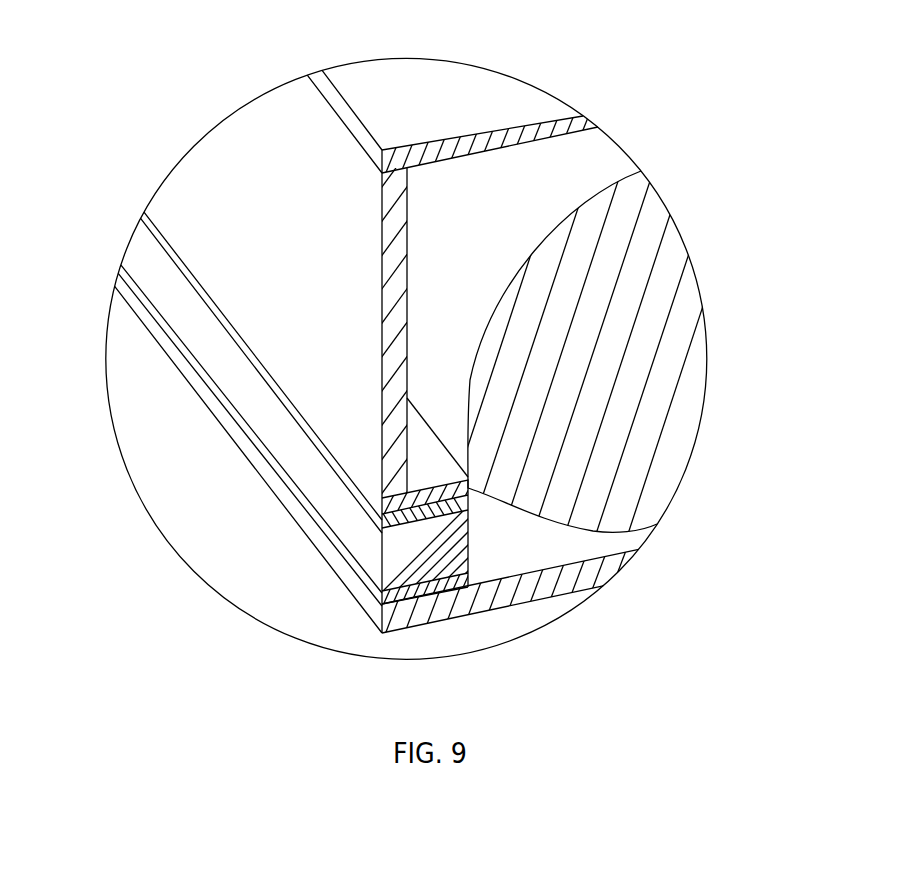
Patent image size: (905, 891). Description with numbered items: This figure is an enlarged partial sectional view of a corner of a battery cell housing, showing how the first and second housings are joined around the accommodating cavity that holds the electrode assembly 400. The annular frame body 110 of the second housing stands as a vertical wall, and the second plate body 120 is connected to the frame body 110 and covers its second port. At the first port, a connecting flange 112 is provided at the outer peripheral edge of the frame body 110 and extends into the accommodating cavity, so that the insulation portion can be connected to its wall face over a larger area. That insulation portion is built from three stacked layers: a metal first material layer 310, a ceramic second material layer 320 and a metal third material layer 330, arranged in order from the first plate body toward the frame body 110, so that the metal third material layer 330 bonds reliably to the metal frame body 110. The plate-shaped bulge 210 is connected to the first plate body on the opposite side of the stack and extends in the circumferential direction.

The frame body 110 is at (407, 357).
The connecting flange 112 is at (407, 357).
The second plate body 120 is at (505, 121).
The bulge 210 is at (543, 590).
The first material layer 310 is at (382, 605).
The second material layer 320 is at (382, 568).
The third material layer 330 is at (382, 520).
The electrode assembly 400 is at (612, 340).